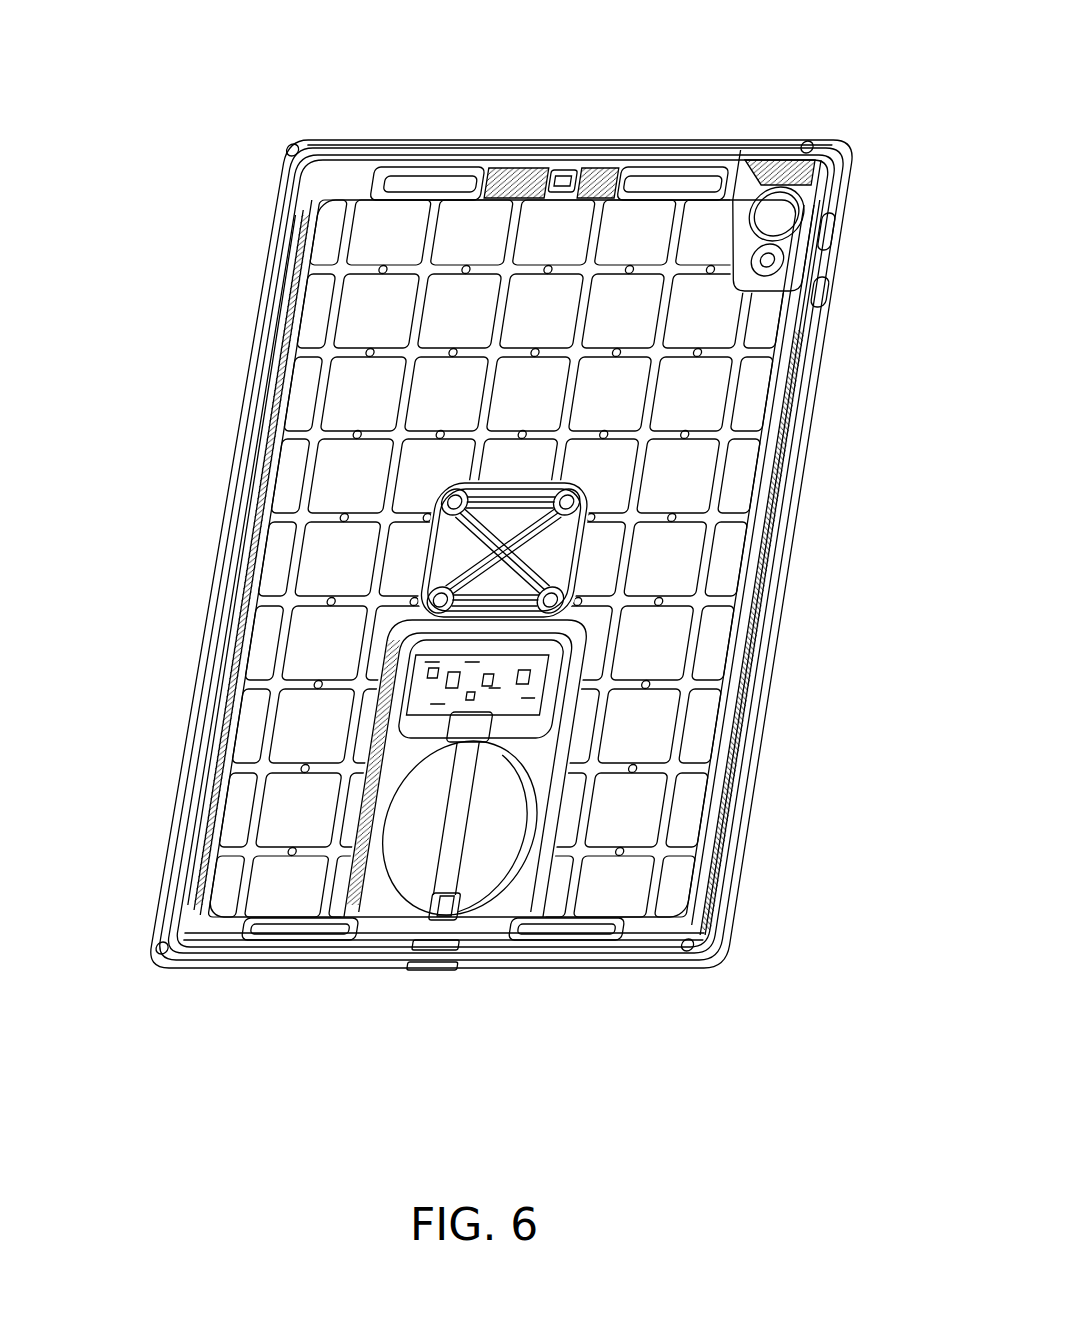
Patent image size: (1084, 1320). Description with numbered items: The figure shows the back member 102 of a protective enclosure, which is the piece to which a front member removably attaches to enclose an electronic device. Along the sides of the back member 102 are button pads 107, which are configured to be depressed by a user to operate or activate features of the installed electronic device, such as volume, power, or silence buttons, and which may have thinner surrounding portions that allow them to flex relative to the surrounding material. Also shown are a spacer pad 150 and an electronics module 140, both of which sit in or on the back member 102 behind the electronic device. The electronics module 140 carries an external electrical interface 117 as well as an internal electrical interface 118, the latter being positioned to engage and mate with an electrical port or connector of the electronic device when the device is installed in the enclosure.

The back member 102 is at (638, 88).
The button pads 107 is at (832, 289).
The spacer pad 150 is at (680, 466).
The electronics module 140 is at (545, 761).
The internal electrical interface 118 is at (426, 926).
The external electrical interface 117 is at (447, 976).